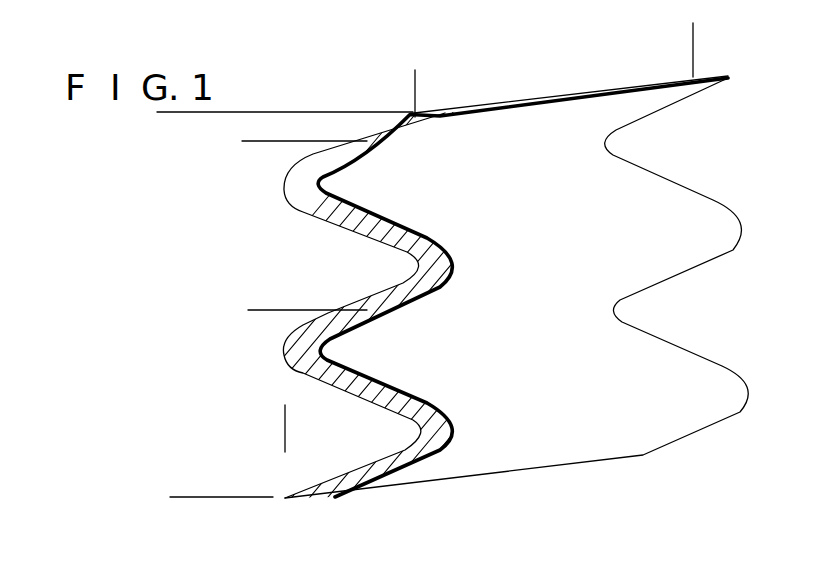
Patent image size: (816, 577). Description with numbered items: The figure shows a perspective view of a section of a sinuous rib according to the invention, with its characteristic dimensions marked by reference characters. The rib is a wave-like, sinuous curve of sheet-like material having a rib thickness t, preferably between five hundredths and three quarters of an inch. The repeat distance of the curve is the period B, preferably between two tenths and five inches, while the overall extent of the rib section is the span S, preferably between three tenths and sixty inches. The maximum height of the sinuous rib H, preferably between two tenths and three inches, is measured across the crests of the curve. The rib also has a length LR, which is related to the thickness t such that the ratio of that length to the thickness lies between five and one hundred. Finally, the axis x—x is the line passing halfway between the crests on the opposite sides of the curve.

The span S is at (184, 124).
The period B is at (259, 153).
The maximum height of the sinuous rib H is at (440, 430).
The length LR is at (681, 48).
The rib thickness t is at (373, 280).
The axis x is at (367, 163).